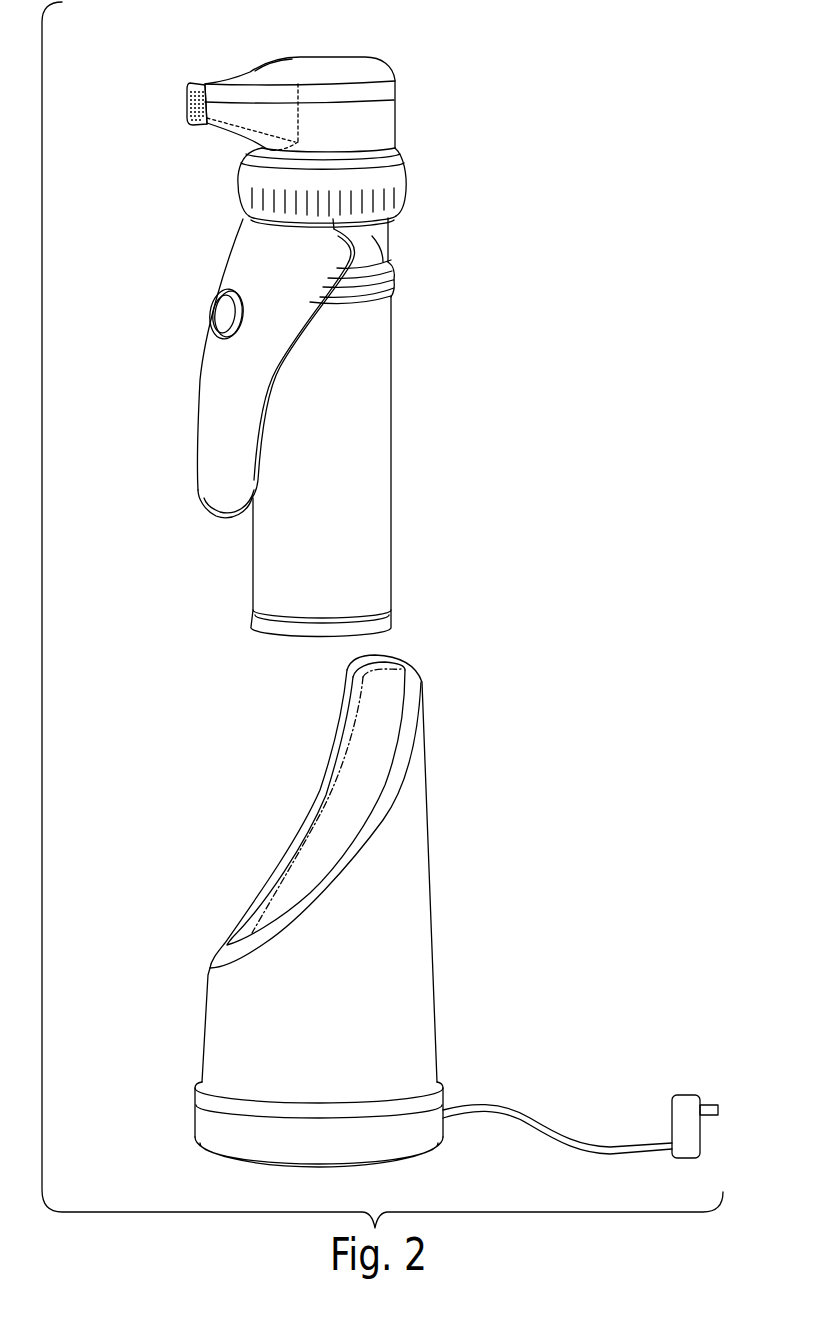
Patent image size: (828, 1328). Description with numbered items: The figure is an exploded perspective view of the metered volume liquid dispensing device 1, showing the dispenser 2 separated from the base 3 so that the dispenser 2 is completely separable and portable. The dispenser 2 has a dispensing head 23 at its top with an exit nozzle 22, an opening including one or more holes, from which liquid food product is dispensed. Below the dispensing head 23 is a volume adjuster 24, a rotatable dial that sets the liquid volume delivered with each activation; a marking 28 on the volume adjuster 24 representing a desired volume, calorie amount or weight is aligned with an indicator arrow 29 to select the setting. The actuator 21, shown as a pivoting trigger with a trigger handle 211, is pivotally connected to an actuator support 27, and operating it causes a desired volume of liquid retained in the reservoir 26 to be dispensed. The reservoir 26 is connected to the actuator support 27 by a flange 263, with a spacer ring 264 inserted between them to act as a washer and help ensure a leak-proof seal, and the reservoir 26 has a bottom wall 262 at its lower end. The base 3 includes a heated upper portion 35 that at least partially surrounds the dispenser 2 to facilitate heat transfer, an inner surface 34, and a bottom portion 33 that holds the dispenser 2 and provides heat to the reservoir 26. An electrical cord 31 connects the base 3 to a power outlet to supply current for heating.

The metered volume liquid dispensing device 1 is at (187, 684).
The dispenser 2 is at (497, 160).
The base 3 is at (497, 746).
The actuator 21 is at (196, 336).
The exit nozzle 22 is at (184, 97).
The dispensing head 23 is at (364, 56).
The volume adjuster 24 is at (410, 162).
The reservoir 26 is at (378, 380).
The actuator support 27 is at (381, 228).
The marking 28 is at (264, 192).
The indicator arrow 29 is at (254, 230).
The electrical cord 31 is at (589, 1128).
The bottom portion 33 is at (207, 1121).
The inner surface 34 is at (352, 768).
The upper portion 35 is at (416, 812).
The trigger handle 211 is at (200, 440).
The bottom wall 262 is at (386, 632).
The flange 263 is at (391, 271).
The spacer ring 264 is at (394, 290).